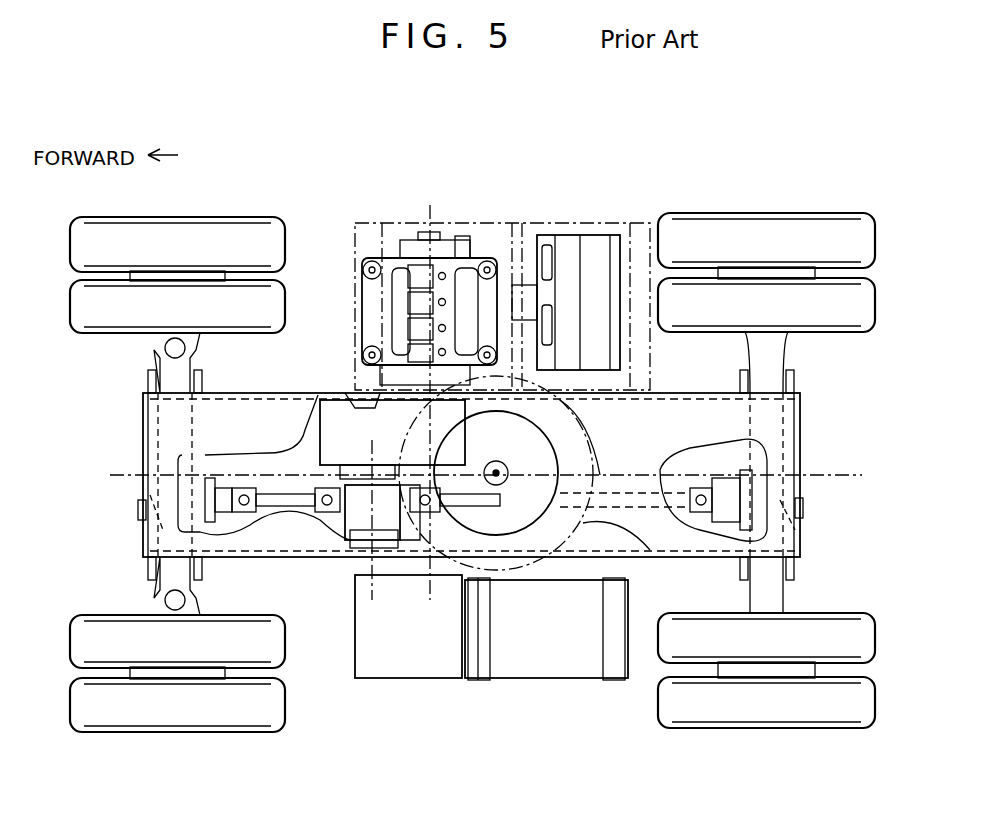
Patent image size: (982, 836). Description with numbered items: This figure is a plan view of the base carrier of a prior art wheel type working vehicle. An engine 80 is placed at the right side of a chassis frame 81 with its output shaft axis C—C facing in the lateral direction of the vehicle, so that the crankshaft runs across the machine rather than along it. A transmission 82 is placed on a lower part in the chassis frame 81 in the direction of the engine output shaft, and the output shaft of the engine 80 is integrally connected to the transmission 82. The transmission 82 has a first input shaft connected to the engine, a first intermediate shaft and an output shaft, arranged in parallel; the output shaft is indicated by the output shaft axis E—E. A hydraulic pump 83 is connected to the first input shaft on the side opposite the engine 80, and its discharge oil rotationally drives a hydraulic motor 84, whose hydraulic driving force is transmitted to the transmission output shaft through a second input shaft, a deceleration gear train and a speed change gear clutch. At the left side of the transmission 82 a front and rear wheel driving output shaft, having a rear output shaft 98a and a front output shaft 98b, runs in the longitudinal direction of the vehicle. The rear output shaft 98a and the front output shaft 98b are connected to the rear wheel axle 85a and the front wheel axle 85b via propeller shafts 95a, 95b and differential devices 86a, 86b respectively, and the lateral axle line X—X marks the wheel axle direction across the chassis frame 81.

The engine 80 is at (418, 275).
The chassis frame 81 is at (134, 455).
The transmission 82 is at (355, 408).
The hydraulic pump 83 is at (468, 455).
The hydraulic motor 84 is at (345, 470).
The rear wheel axle 85a is at (775, 365).
The front wheel axle 85b is at (160, 375).
The differential device 86a is at (803, 520).
The differential device 86b is at (150, 513).
The propeller shaft 95a is at (640, 532).
The propeller shaft 95b is at (280, 505).
The rear output shaft 98a is at (412, 545).
The front output shaft 98b is at (345, 520).
The output shaft axis C is at (430, 390).
The output shaft axis E is at (373, 523).
The lateral axis X is at (473, 477).